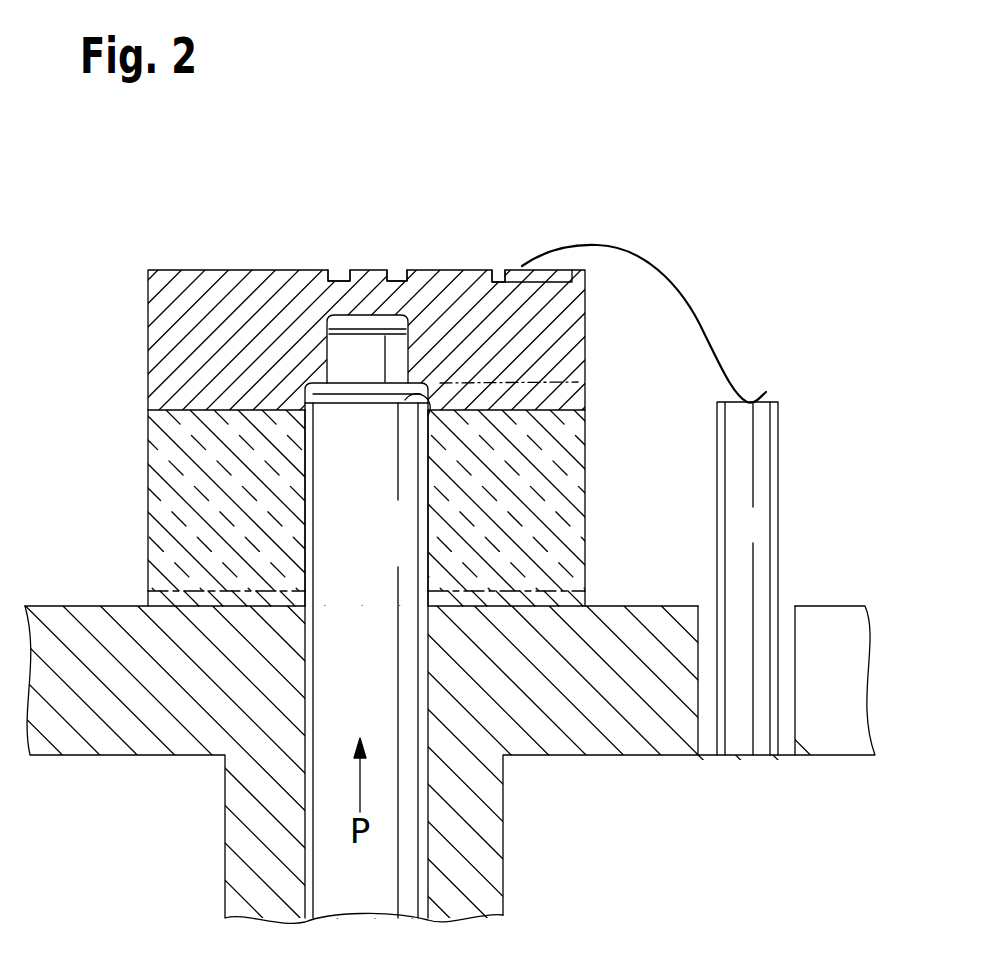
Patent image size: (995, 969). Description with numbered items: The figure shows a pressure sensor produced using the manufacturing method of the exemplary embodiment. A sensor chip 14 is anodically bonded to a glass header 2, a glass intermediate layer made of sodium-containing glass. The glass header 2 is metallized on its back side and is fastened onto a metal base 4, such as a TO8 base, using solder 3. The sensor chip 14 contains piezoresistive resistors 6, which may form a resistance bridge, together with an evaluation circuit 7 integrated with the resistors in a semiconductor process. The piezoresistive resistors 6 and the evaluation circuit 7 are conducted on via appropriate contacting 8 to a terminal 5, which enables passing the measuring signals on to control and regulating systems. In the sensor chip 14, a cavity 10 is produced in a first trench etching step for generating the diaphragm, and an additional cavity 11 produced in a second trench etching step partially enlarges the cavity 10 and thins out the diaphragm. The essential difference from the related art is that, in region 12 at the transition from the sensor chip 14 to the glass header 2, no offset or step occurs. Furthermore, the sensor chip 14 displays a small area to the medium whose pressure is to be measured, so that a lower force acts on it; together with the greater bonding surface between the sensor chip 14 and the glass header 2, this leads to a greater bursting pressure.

The glass header 2 is at (167, 452).
The solder 3 is at (160, 600).
The metal base 4 is at (104, 742).
The terminal 5 is at (760, 460).
The piezoresistive resistors 6 is at (393, 280).
The evaluation circuit 7 is at (498, 280).
The contacting 8 is at (645, 256).
The cavity 10 is at (391, 343).
The additional cavity 11 is at (332, 404).
The region 12 is at (593, 381).
The sensor chip 14 is at (205, 278).